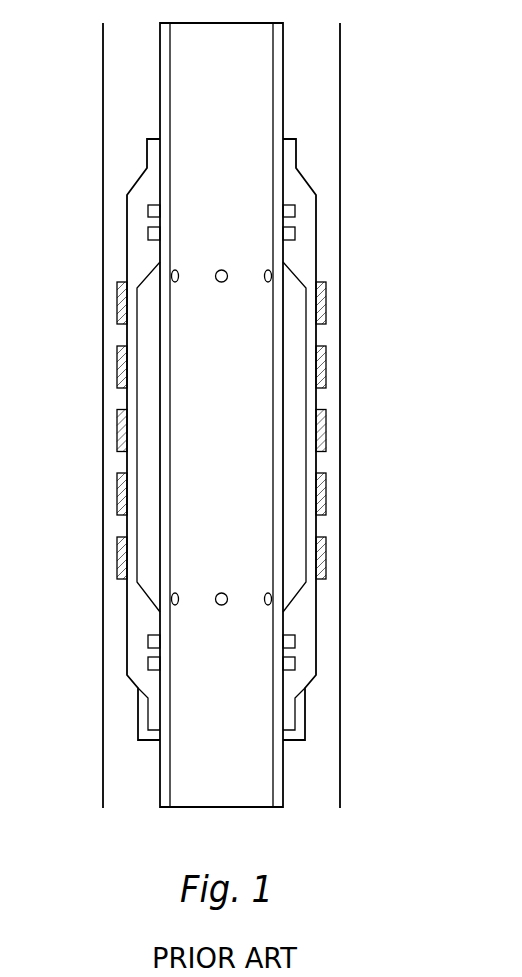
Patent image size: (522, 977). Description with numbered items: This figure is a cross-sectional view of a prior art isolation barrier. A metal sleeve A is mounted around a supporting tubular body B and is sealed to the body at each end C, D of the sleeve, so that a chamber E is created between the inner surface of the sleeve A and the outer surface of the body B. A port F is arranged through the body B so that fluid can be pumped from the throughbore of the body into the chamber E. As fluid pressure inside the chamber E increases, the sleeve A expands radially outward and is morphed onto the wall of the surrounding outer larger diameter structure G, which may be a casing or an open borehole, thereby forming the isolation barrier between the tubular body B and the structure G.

The metal sleeve A is at (127, 462).
The supporting tubular body B is at (277, 67).
The end of the sleeve C is at (307, 230).
The end of the sleeve D is at (305, 653).
The chamber E is at (148, 527).
The port F is at (216, 601).
The outer larger diameter structure G is at (103, 125).